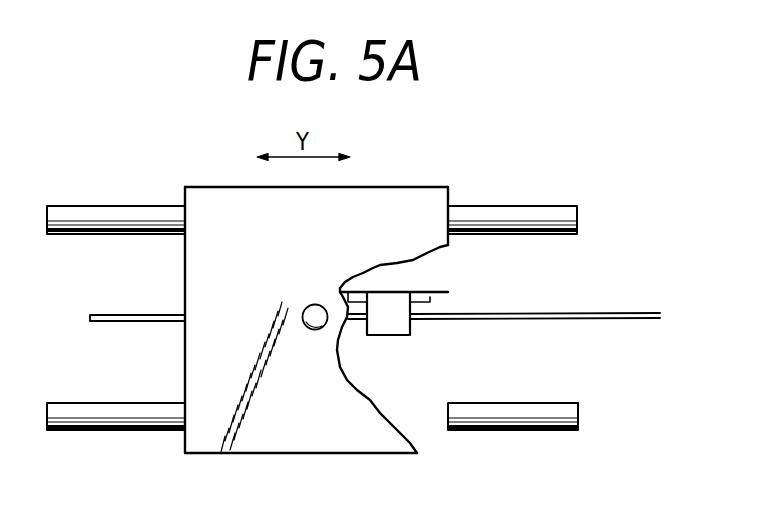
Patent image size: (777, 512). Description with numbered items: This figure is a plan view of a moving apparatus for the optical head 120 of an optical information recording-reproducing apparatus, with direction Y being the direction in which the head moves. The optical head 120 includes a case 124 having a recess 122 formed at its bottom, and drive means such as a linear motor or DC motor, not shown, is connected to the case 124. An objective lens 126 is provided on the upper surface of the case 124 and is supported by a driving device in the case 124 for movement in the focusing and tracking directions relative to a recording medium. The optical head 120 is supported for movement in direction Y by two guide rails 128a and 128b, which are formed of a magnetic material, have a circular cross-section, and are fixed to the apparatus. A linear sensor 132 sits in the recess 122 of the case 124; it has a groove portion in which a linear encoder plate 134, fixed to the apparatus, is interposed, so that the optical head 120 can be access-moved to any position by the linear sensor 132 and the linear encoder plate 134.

The optical head 120 is at (468, 179).
The recess 122 is at (447, 302).
The case 124 is at (415, 200).
The objective lens 126 is at (312, 303).
The guide rail 128a is at (560, 212).
The guide rail 128b is at (566, 410).
The linear sensor 132 is at (398, 322).
The linear encoder plate 134 is at (613, 313).